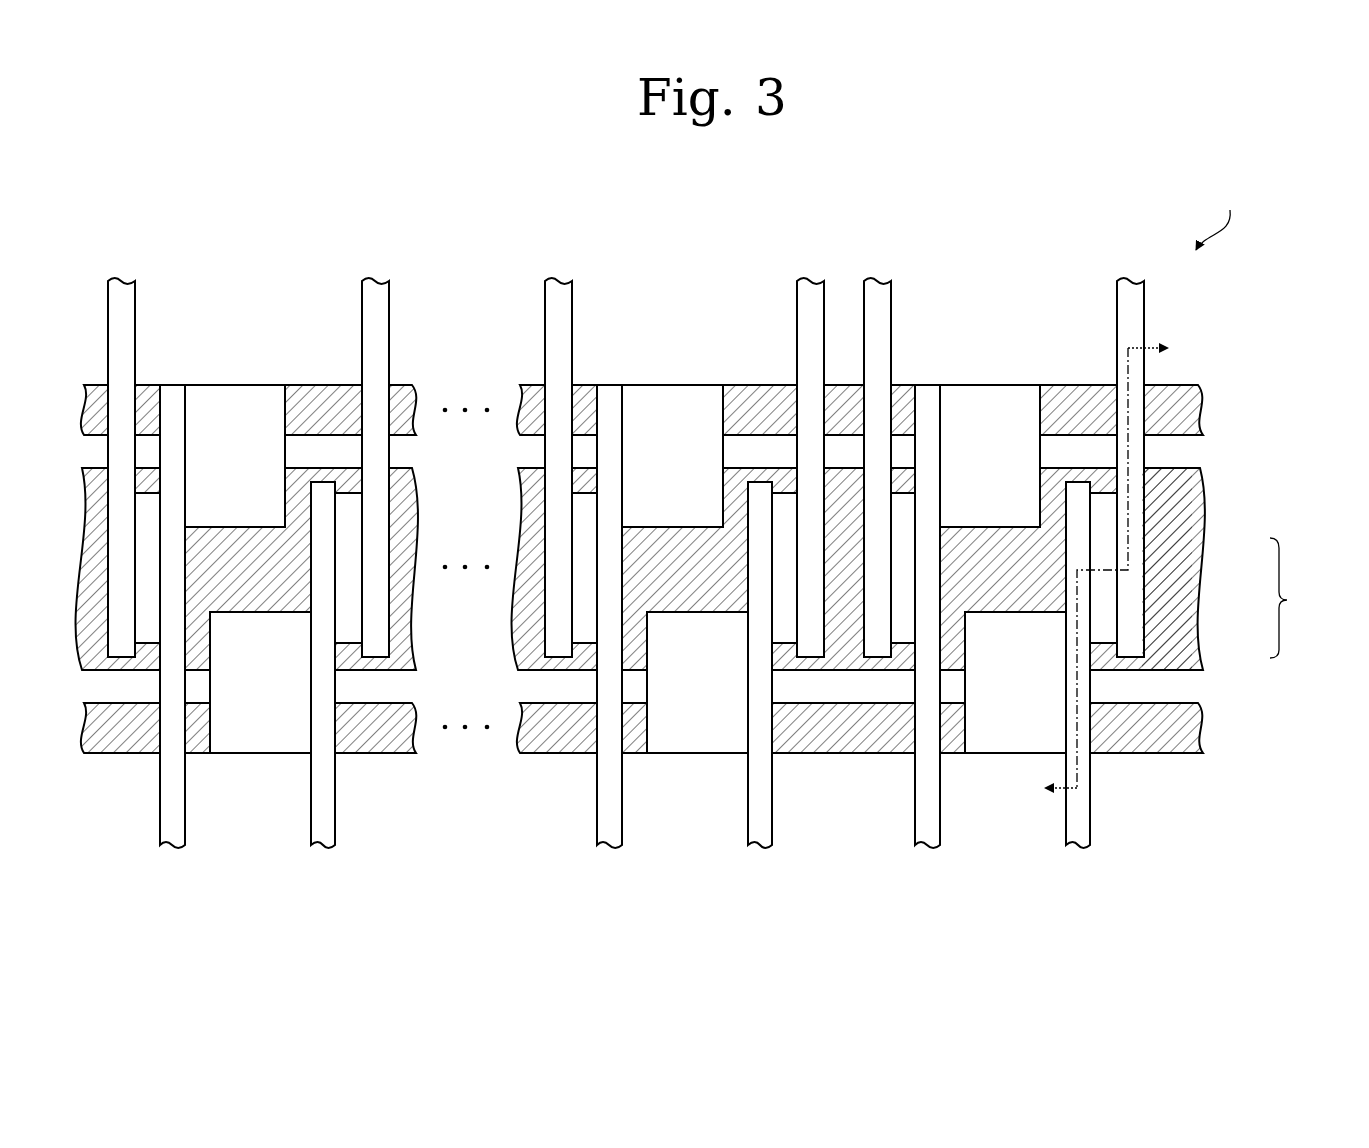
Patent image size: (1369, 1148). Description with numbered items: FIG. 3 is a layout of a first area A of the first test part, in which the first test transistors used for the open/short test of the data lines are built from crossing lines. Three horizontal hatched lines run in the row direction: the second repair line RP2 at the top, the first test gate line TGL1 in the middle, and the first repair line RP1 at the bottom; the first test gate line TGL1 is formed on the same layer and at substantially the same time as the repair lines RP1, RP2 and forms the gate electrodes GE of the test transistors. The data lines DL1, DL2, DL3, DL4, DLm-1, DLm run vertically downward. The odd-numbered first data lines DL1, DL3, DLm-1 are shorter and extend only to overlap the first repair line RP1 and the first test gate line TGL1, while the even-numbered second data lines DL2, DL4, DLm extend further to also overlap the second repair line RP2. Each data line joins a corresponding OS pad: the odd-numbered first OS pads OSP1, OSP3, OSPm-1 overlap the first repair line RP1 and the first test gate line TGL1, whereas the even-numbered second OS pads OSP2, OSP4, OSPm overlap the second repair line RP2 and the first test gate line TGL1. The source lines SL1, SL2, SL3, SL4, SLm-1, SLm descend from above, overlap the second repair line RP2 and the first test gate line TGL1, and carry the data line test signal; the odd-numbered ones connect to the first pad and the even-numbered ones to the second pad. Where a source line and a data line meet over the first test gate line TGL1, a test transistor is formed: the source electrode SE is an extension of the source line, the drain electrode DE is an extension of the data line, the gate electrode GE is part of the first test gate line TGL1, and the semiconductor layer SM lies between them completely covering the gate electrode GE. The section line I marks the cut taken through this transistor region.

The second repair line RP2 is at (1192, 412).
The first test gate line TGL1 is at (1197, 503).
The first repair line RP1 is at (1190, 730).
The m-th OS pad OSPm is at (237, 395).
The fourth OS pad OSP4 is at (677, 395).
The second OS pad OSP2 is at (995, 395).
The (m-1)-th OS pad OSPm-1 is at (262, 755).
The third OS pad OSP3 is at (700, 755).
The first OS pad OSP1 is at (998, 755).
The m-th source line SLm is at (123, 290).
The (m-1)-th source line SLm-1 is at (377, 290).
The fourth source line SL4 is at (560, 290).
The third source line SL3 is at (812, 290).
The second source line SL2 is at (879, 290).
The first source line SL1 is at (1132, 290).
The m-th data line DLm is at (173, 838).
The (m-1)-th data line DLm-1 is at (323, 838).
The fourth data line DL4 is at (610, 838).
The third data line DL3 is at (760, 838).
The second data line DL2 is at (928, 838).
The first data line DL1 is at (1078, 838).
The gate electrode GE is at (1150, 548).
The source electrode SE is at (1133, 575).
The semiconductor layer SM is at (1106, 602).
The drain electrode DE is at (1085, 632).
The section line I-I' I is at (1103, 572).
The region A is at (1217, 216).